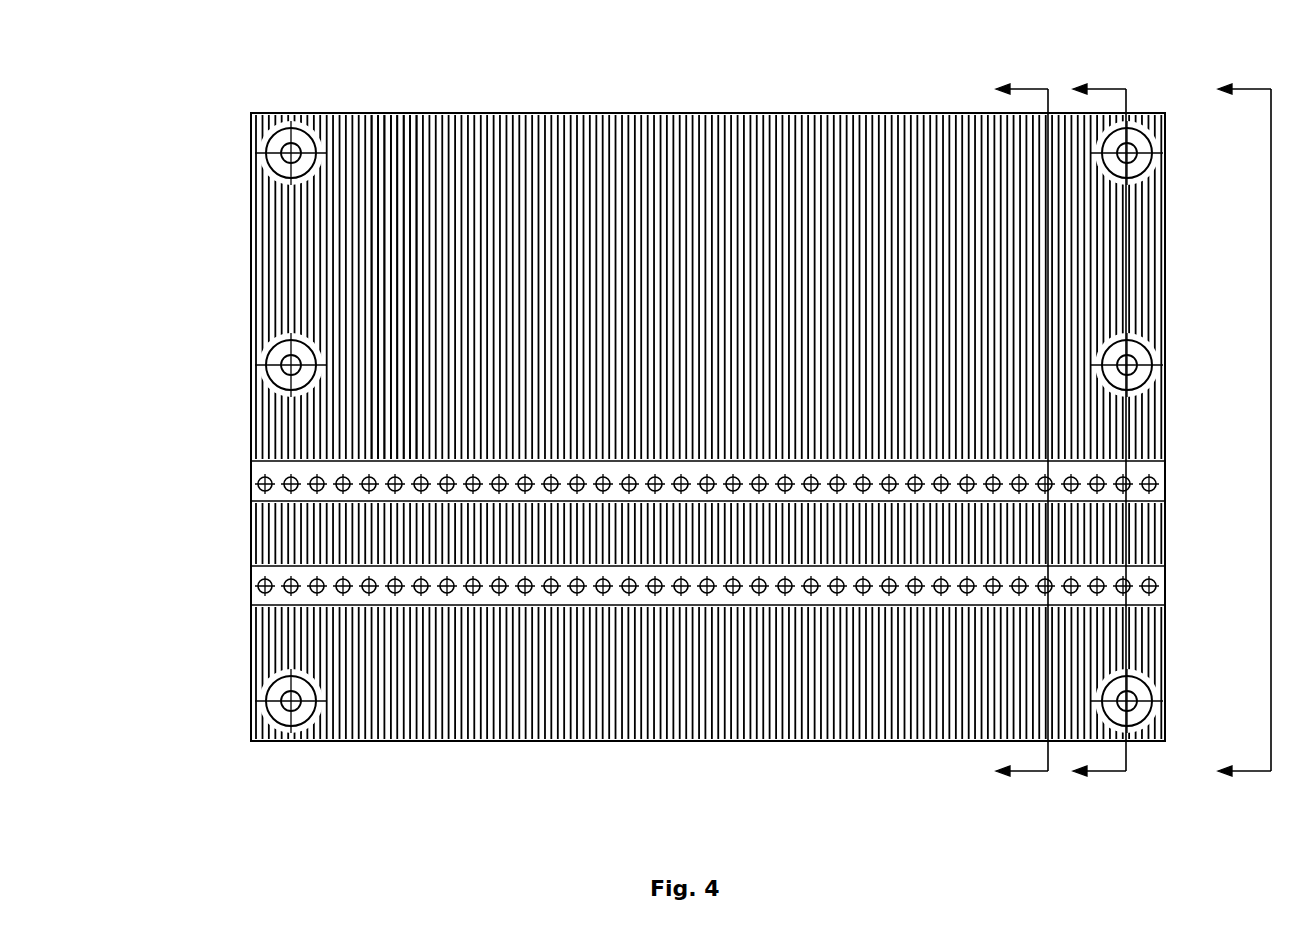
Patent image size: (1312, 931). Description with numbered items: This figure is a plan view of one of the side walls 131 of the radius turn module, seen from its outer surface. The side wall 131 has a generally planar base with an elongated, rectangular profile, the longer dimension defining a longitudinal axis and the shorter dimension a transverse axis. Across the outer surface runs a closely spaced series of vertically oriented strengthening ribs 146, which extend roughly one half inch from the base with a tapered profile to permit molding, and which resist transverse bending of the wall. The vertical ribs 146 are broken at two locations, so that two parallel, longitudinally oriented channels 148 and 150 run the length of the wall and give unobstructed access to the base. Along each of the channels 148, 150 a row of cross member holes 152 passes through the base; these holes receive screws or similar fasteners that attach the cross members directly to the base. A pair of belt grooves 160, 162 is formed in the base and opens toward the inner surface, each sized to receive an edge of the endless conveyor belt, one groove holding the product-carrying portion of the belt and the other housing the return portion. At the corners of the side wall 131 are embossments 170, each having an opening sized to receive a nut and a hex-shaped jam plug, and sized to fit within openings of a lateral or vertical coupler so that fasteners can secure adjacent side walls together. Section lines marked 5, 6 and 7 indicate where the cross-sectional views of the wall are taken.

The heat sink 131 is at (489, 105).
The fins 146 is at (403, 105).
The first row of through holes / manifold 148 is at (243, 463).
The second row of through holes / manifold 150 is at (243, 569).
The through holes 152 is at (1212, 574).
The upper fin section 160 is at (243, 418).
The lower fin section 162 is at (243, 640).
The mounting holes 170 is at (1212, 691).
The section line for FIG. 5 is at (1244, 431).
The section line for FIG. 6 is at (1099, 431).
The section line for FIG. 7 is at (1022, 431).